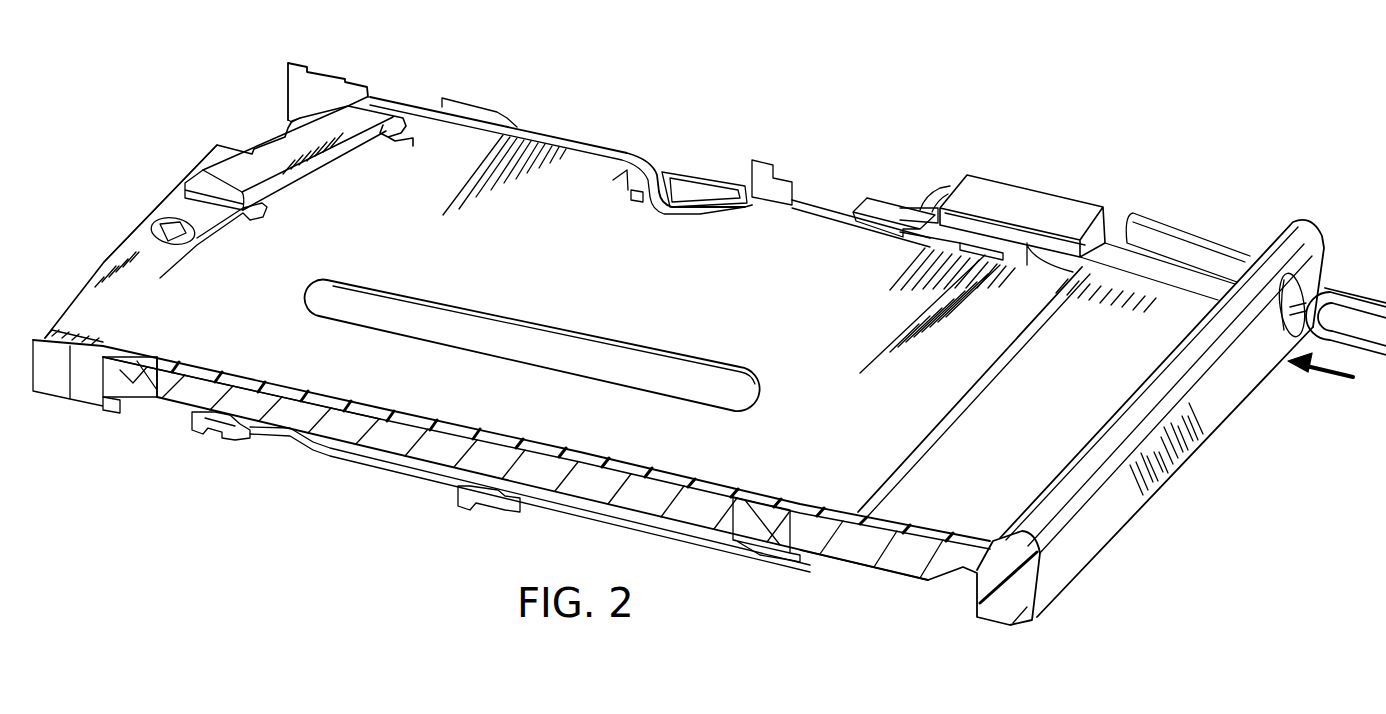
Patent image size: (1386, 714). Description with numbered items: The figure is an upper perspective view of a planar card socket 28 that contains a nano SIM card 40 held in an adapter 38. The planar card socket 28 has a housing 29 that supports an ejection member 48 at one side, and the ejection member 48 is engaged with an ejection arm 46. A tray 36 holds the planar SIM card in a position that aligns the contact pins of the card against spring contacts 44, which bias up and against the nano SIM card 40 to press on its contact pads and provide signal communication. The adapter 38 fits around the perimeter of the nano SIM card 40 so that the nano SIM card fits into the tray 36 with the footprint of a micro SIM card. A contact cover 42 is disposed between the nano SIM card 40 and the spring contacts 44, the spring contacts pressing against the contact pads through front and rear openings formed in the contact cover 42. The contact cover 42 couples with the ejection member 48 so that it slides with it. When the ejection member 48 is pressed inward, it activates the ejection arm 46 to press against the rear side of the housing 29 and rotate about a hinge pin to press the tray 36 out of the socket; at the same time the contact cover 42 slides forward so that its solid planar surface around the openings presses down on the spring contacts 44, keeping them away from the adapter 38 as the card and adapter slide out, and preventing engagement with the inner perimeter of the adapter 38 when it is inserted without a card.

The planar card socket 28 is at (870, 110).
The housing 29 is at (823, 202).
The tray 36 is at (885, 570).
The adapter 38 is at (147, 392).
The nano SIM card 40 is at (398, 436).
The contact cover 42 is at (223, 423).
The spring contacts 44 is at (314, 450).
The ejection arm 46 is at (125, 237).
The ejection member 48 is at (1353, 283).